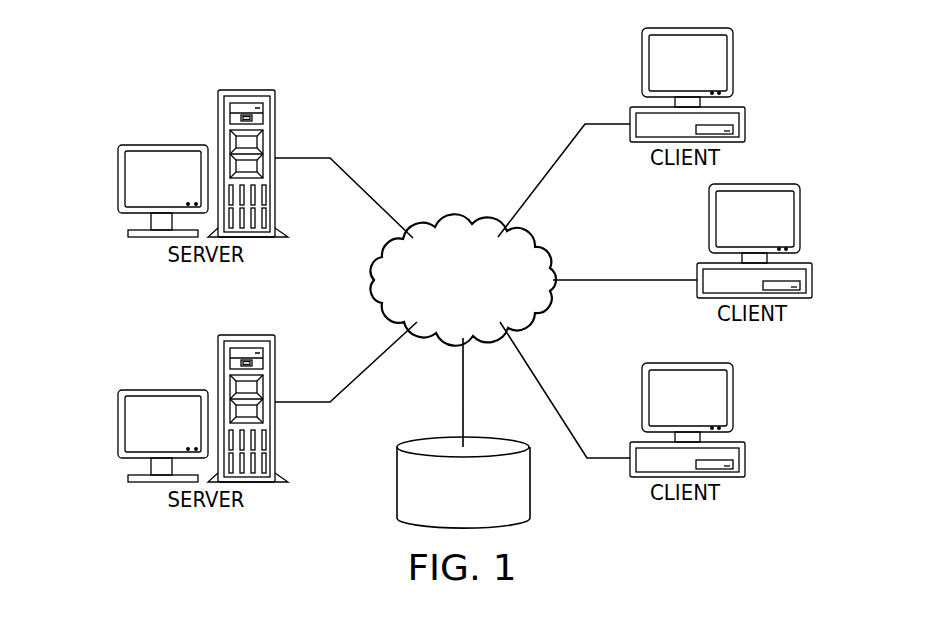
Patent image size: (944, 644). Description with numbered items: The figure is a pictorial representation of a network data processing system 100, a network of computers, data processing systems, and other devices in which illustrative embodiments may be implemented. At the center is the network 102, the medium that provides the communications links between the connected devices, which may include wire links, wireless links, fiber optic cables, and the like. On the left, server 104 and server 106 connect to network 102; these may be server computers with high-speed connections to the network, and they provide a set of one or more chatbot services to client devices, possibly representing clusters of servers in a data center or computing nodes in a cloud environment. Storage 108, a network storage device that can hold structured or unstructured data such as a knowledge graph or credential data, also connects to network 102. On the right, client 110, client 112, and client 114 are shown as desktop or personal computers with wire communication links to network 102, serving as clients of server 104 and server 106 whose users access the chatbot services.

The network data processing system 100 is at (334, 82).
The network 102 is at (438, 232).
The server 104 is at (118, 182).
The server 106 is at (118, 425).
The storage 108 is at (397, 480).
The client 110 is at (745, 118).
The client 112 is at (812, 290).
The client 114 is at (745, 467).